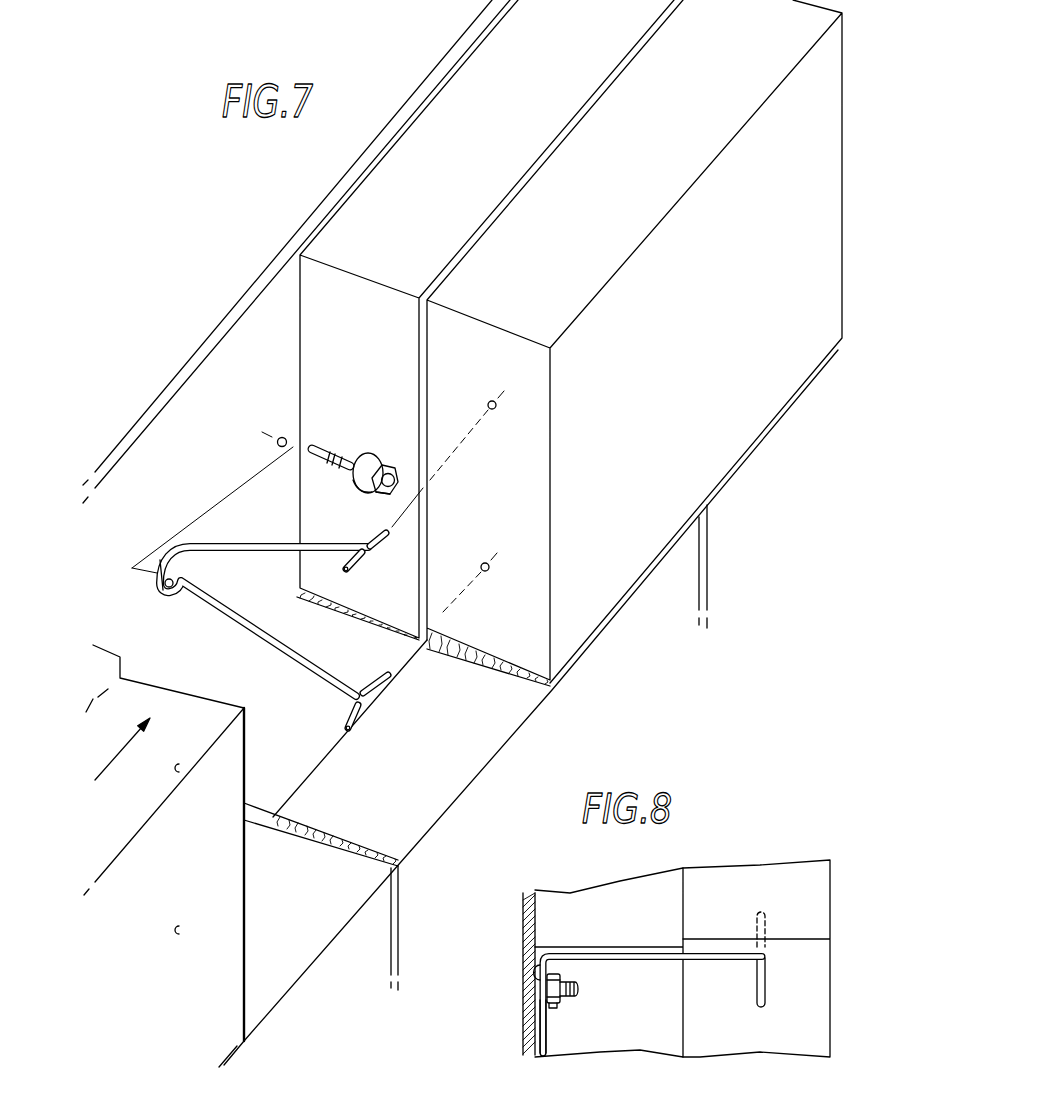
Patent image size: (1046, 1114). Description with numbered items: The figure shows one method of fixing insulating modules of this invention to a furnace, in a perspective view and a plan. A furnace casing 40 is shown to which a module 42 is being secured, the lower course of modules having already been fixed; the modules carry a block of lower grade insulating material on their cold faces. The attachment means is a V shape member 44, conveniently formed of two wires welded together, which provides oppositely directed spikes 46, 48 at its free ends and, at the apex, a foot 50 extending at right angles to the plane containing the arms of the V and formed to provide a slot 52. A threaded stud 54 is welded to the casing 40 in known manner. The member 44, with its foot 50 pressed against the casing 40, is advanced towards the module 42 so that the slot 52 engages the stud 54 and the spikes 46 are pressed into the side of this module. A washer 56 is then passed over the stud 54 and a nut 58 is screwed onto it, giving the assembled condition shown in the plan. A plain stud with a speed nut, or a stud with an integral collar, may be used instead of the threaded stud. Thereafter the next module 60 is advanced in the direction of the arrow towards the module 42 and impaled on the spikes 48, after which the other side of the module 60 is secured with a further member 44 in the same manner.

In FIG. 7, the furnace casing 40 is at (378, 320).
In FIG. 8, the furnace casing 40 is at (523, 922).
In FIG. 7, the module 42 is at (543, 520).
In FIG. 8, the module 42 is at (768, 873).
In FIG. 7, the V shape member 44 is at (253, 539).
In FIG. 8, the V shape member 44 is at (648, 968).
In FIG. 7, the spikes 46 is at (380, 549).
In FIG. 8, the spikes 46 is at (755, 913).
In FIG. 7, the spikes 48 is at (354, 569).
In FIG. 8, the spikes 48 is at (770, 985).
In FIG. 7, the foot 50 is at (171, 557).
In FIG. 8, the foot 50 is at (541, 1054).
In FIG. 7, the slot 52 is at (183, 596).
In FIG. 8, the slot 52 is at (527, 972).
In FIG. 7, the threaded stud 54 is at (333, 452).
In FIG. 8, the threaded stud 54 is at (576, 994).
In FIG. 7, the washer 56 is at (380, 458).
In FIG. 8, the washer 56 is at (545, 973).
In FIG. 7, the nut 58 is at (398, 480).
In FIG. 8, the nut 58 is at (558, 1008).
In FIG. 7, the module 60 is at (241, 856).